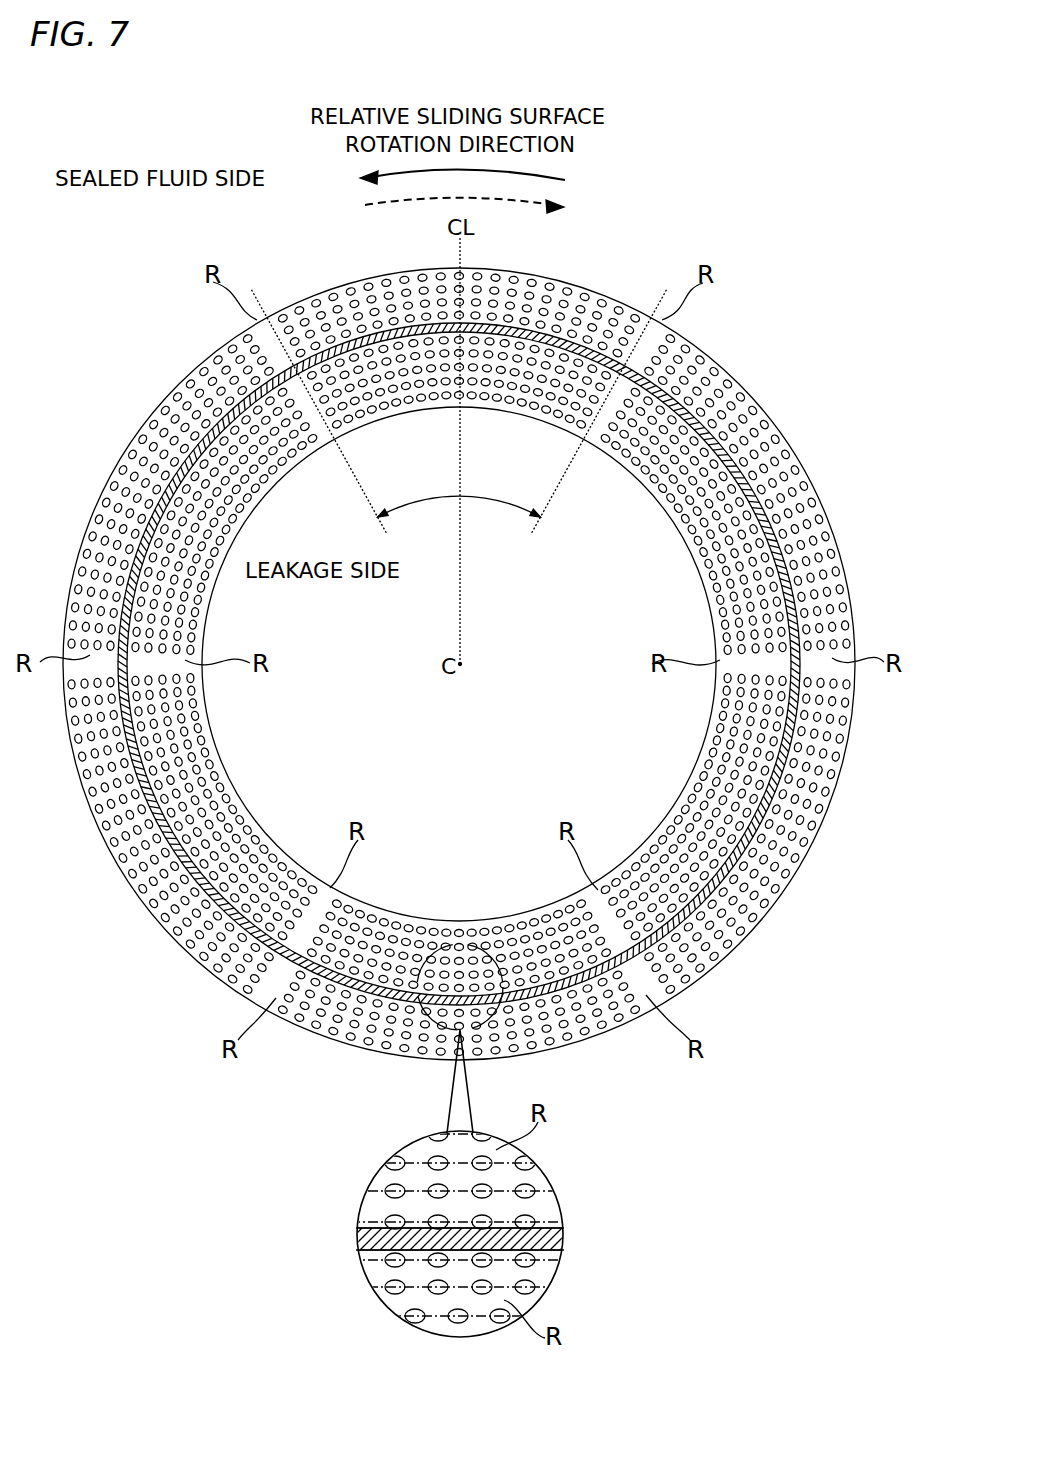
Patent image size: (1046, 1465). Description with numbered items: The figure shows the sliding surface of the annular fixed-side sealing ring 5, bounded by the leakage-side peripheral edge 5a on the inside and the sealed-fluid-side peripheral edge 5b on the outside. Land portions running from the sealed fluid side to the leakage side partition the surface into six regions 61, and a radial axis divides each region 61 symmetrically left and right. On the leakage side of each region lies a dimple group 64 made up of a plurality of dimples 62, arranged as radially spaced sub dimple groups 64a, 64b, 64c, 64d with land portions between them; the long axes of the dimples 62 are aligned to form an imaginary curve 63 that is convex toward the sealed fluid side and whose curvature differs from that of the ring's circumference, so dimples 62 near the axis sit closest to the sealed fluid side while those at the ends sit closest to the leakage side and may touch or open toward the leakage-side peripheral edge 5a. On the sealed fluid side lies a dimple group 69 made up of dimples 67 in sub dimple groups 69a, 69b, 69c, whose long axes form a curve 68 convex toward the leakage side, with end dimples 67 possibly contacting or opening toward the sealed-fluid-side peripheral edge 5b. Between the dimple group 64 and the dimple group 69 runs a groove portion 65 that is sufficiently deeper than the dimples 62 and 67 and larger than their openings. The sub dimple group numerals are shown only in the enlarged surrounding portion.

The fixed-side sealing ring 5 is at (472, 804).
The leakage-side peripheral edge 5a is at (657, 520).
The sealed-fluid-side peripheral edge 5b is at (803, 460).
The region 61 is at (459, 487).
The dimple 62 is at (459, 785).
The curve 63 is at (556, 1228).
The dimple group 64 is at (459, 785).
The sub dimple group 64a is at (422, 1130).
The sub dimple group 64b is at (460, 1163).
The sub dimple group 64c is at (460, 1191).
The sub dimple group 64d is at (460, 1222).
The groove portion 65 is at (514, 755).
The dimple 67 is at (519, 300).
The curve 68 is at (459, 811).
The dimple group 69 is at (459, 811).
The sub dimple group 69a is at (460, 1260).
The sub dimple group 69b is at (460, 1287).
The sub dimple group 69c is at (457, 1316).